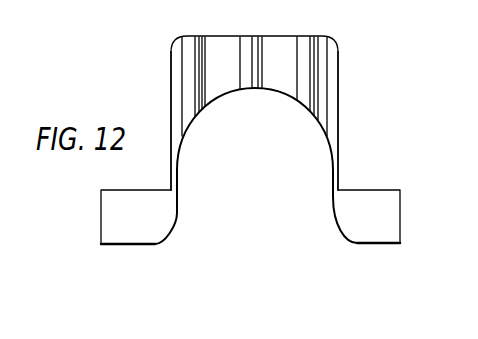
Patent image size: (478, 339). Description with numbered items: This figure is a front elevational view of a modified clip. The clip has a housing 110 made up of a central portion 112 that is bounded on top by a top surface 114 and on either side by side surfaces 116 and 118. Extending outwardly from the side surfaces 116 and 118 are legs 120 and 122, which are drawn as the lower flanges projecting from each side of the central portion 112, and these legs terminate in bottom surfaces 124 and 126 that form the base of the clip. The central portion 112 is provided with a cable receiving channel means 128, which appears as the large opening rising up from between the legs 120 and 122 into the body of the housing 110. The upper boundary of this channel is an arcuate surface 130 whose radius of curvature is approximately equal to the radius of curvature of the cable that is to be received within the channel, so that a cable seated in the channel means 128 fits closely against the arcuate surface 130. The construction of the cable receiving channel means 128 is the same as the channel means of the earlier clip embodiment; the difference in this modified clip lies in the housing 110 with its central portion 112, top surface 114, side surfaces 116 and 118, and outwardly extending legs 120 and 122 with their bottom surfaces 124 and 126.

The housing 110 is at (168, 272).
The central portion 112 is at (222, 85).
The top surface 114 is at (220, 37).
The side surface 116 is at (171, 73).
The side surface 118 is at (338, 122).
The leg 120 is at (106, 226).
The leg 122 is at (388, 213).
The bottom surface 124 is at (117, 247).
The bottom surface 126 is at (380, 244).
The cable receiving channel means 128 is at (253, 178).
The arcuate surface 130 is at (284, 93).